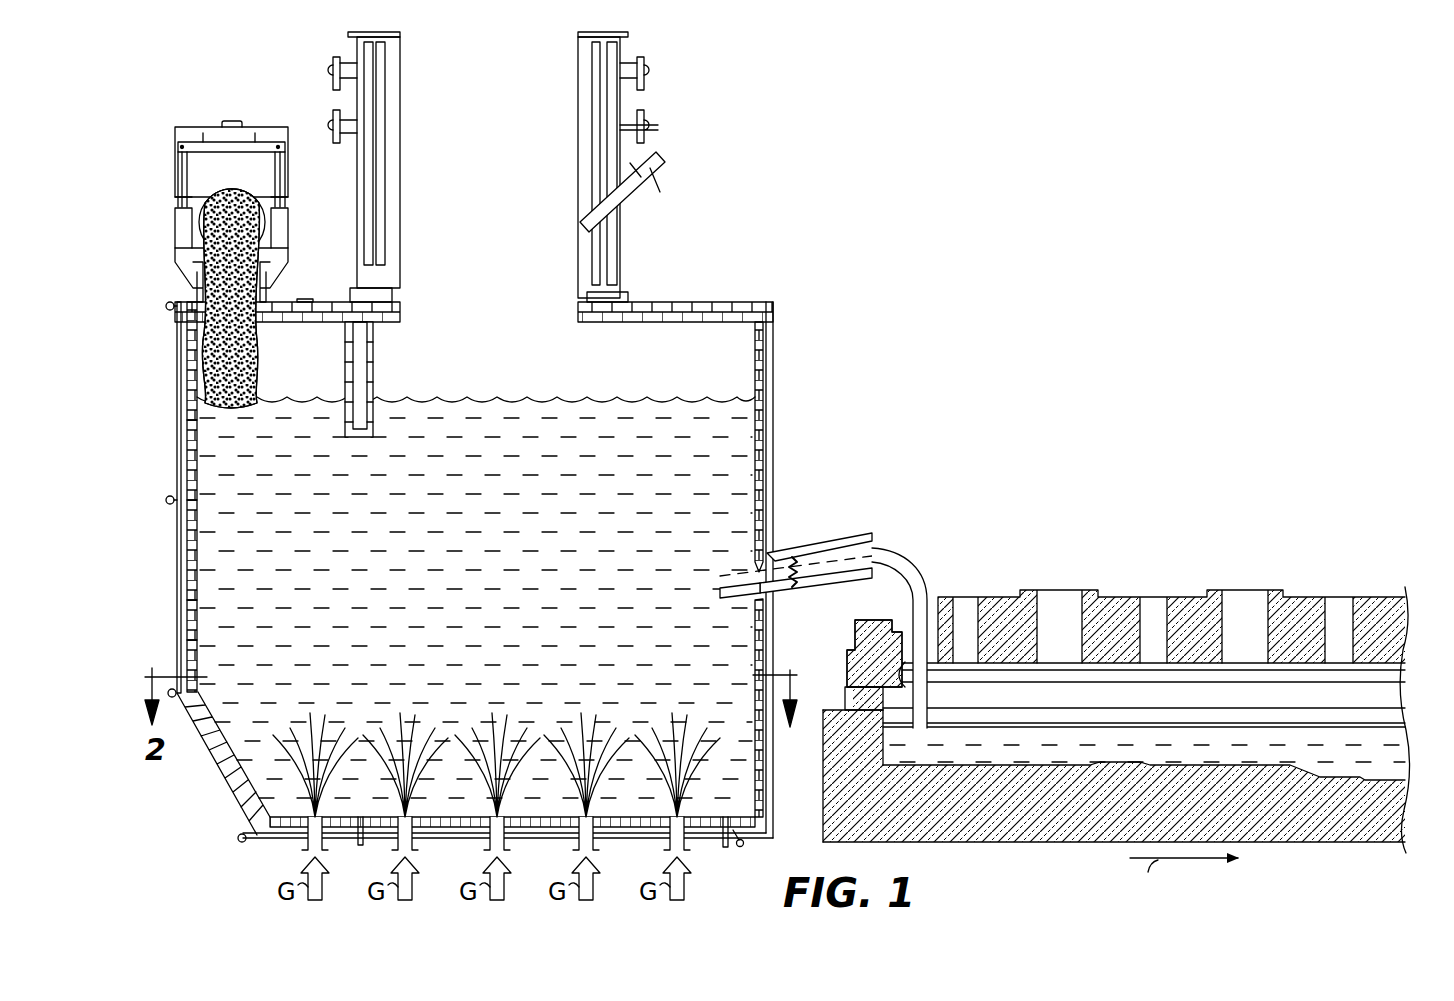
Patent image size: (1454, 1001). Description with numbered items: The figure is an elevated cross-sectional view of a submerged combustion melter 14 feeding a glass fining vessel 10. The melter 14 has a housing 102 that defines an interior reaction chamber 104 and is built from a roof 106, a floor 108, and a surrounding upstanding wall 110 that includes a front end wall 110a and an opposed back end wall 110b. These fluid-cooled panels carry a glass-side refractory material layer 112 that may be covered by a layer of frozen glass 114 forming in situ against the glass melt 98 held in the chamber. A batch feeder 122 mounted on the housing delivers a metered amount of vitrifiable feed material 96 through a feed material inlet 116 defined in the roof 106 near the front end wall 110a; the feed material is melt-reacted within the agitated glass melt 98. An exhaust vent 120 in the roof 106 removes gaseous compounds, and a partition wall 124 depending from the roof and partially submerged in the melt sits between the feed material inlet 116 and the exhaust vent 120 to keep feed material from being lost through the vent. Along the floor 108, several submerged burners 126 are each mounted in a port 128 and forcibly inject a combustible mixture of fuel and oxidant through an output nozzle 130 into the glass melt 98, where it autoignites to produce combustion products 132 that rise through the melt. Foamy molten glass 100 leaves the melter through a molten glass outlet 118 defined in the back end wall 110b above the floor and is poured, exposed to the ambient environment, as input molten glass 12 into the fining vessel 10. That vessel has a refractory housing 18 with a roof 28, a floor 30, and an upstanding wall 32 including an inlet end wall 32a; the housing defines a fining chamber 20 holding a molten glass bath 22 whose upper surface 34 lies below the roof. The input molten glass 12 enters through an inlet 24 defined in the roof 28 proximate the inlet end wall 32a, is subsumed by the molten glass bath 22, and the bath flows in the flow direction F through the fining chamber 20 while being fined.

The glass fining vessel 10 is at (1100, 691).
The input molten glass 12 is at (903, 563).
The submerged combustion melter 14 is at (470, 531).
The housing 18 is at (842, 633).
The fining chamber 20 is at (1378, 663).
The molten glass bath 22 is at (955, 745).
The inlet 24 is at (910, 630).
The roof 28 is at (1300, 605).
The floor 30 is at (1001, 842).
The upstanding wall 32 is at (836, 758).
The inlet end wall 32a is at (818, 716).
The surface of the molten glass bath 34 is at (1073, 728).
The vitrifiable feed material 96 is at (217, 220).
The glass melt 98 is at (489, 536).
The foamy molten glass 100 is at (738, 598).
The housing 102 is at (176, 348).
The interior reaction chamber 104 is at (197, 433).
The roof 106 is at (656, 300).
The floor 108 is at (446, 836).
The surrounding upstanding wall 110 is at (178, 568).
The front end wall 110a is at (180, 532).
The back end wall 110b is at (768, 436).
The glass-side refractory material layer 112 is at (216, 632).
The layer of frozen glass 114 is at (197, 648).
The feed material inlet 116 is at (248, 316).
The molten glass outlet 118 is at (760, 570).
The exhaust vent 120 is at (397, 304).
The batch feeder 122 is at (192, 166).
The partition wall 124 is at (360, 380).
The submerged burner 126 is at (398, 843).
The port 128 is at (306, 846).
The output nozzle 130 is at (308, 816).
The combustion products 132 is at (342, 752).